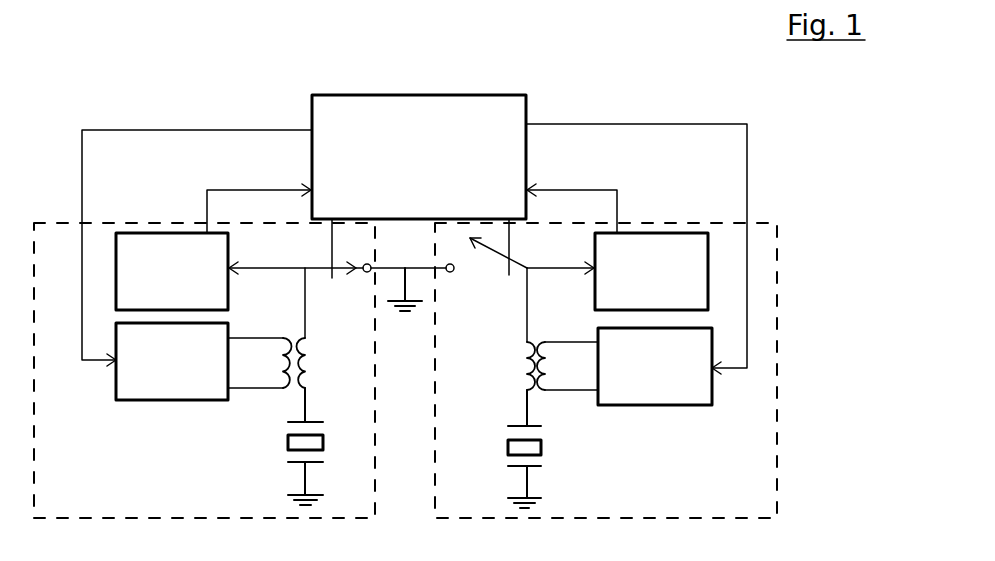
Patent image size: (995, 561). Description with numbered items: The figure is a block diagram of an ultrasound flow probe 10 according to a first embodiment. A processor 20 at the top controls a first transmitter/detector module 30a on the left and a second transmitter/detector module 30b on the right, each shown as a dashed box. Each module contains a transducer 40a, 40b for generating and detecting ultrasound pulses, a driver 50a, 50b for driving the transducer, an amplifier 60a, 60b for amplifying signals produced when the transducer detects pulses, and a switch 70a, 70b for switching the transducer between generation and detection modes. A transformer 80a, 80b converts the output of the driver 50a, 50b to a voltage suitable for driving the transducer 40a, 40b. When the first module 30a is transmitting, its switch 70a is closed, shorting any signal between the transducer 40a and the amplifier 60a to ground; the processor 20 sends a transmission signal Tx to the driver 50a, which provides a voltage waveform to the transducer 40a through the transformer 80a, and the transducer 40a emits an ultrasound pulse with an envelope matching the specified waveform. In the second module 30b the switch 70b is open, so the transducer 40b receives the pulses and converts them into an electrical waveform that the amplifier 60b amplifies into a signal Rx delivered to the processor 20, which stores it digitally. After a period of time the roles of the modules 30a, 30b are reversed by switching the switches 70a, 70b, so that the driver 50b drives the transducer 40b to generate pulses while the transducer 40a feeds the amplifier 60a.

The ultrasound flow probe 10 is at (225, 70).
The processor 20 is at (419, 157).
The first transmitter/detector module 30a is at (244, 370).
The second transmitter/detector module 30b is at (606, 370).
The transducer 40a is at (288, 441).
The transducer 40b is at (545, 447).
The driver 50a is at (172, 361).
The driver 50b is at (655, 366).
The amplifier 60a is at (172, 271).
The amplifier 60b is at (651, 271).
The switch 70a is at (362, 283).
The switch 70b is at (467, 273).
The transformer 80a is at (313, 365).
The transformer 80b is at (524, 368).